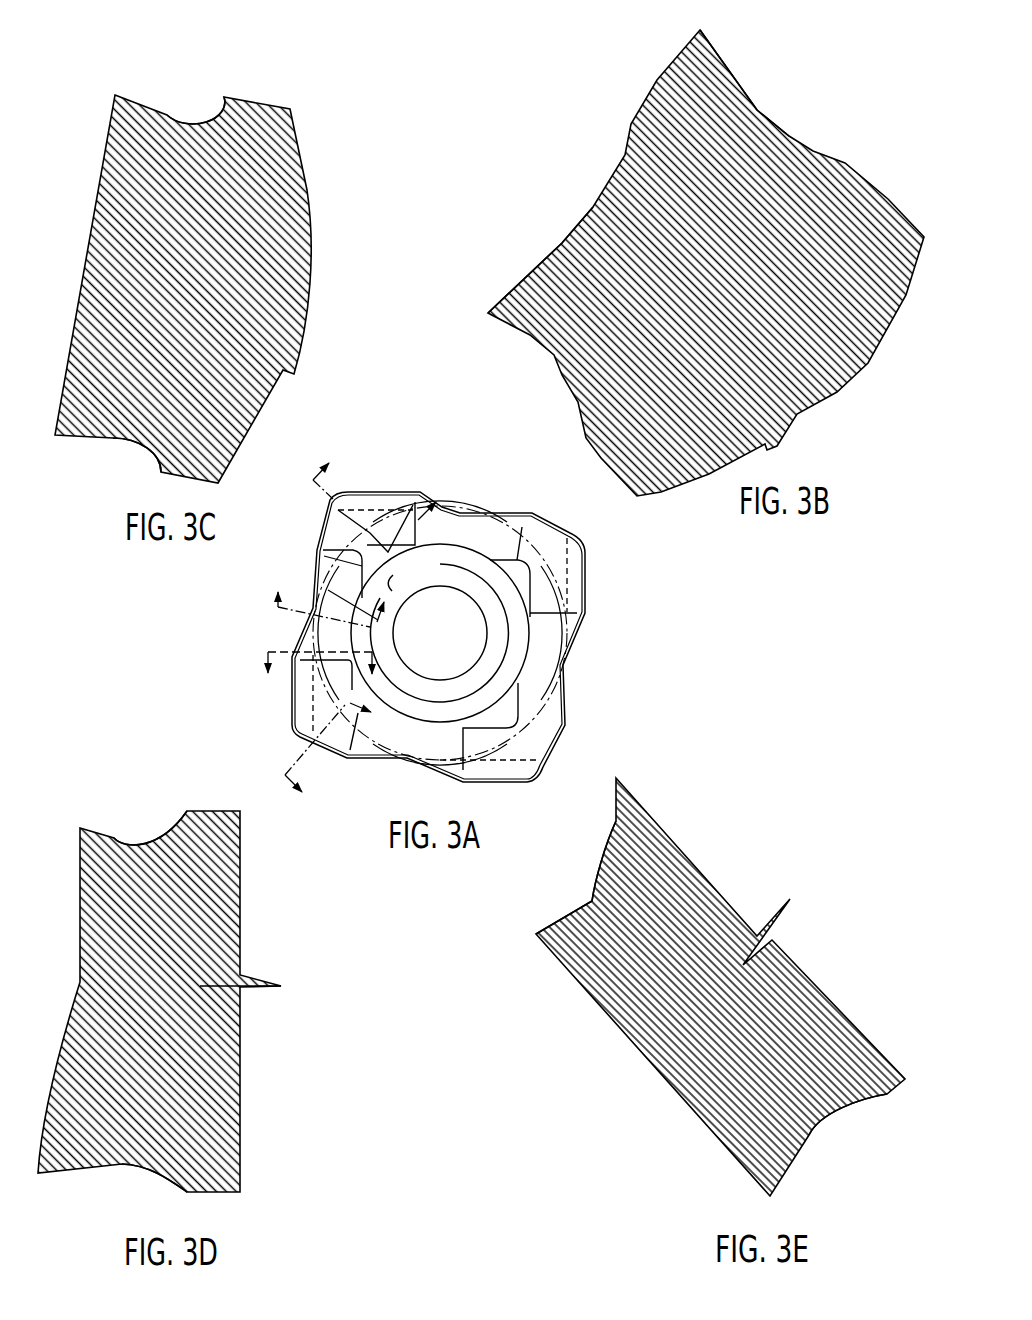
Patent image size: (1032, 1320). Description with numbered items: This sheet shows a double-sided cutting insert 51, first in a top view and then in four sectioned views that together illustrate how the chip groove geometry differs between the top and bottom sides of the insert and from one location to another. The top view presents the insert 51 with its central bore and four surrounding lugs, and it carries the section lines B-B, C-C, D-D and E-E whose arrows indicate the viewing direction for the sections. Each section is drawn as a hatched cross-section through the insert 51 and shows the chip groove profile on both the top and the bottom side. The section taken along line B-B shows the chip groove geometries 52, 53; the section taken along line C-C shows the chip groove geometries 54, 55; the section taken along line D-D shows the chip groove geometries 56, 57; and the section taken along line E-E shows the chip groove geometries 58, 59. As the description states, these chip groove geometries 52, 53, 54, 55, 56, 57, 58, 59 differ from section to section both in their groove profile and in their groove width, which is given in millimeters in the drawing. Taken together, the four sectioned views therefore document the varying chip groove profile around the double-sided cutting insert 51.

In FIG. 3A, the double-sided cutting insert 51 is at (589, 673).
In FIG. 3B, the chip groove geometry 52 is at (753, 113).
In FIG. 3B, the chip groove geometry 53 is at (554, 357).
In FIG. 3C, the chip groove geometry 54 is at (176, 121).
In FIG. 3C, the chip groove geometry 55 is at (123, 432).
In FIG. 3D, the chip groove geometry 56 is at (118, 1163).
In FIG. 3D, the chip groove geometry 57 is at (147, 847).
In FIG. 3E, the chip groove geometry 58 is at (799, 1138).
In FIG. 3E, the chip groove geometry 59 is at (590, 903).